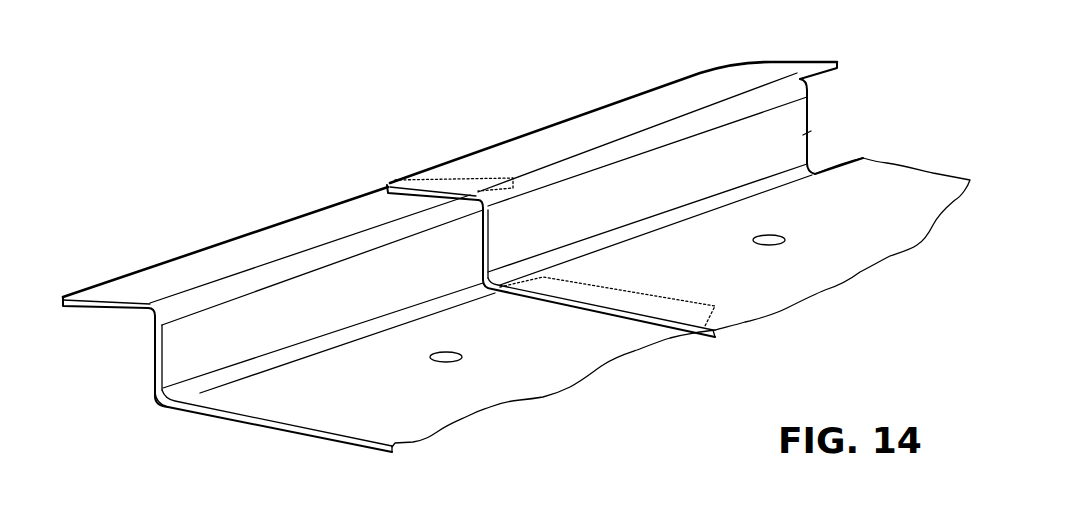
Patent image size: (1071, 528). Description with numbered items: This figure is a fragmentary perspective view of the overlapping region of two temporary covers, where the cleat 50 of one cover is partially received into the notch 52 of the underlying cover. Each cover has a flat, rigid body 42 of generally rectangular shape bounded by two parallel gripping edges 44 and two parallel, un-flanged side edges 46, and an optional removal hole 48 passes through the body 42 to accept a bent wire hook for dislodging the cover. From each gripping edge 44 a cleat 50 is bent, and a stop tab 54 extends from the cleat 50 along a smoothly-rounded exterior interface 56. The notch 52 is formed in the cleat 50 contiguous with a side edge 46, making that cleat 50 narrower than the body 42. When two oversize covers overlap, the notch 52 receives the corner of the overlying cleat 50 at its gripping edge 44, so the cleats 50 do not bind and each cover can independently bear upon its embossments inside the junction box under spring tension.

The body 42 is at (520, 390).
The gripping edge 44 is at (155, 403).
The side edge 46 is at (320, 440).
The removal hole 48 is at (431, 357).
The cleat 50 is at (333, 311).
The notch 52 is at (487, 252).
The stop tab 54 is at (188, 262).
The exterior interface 56 is at (275, 268).